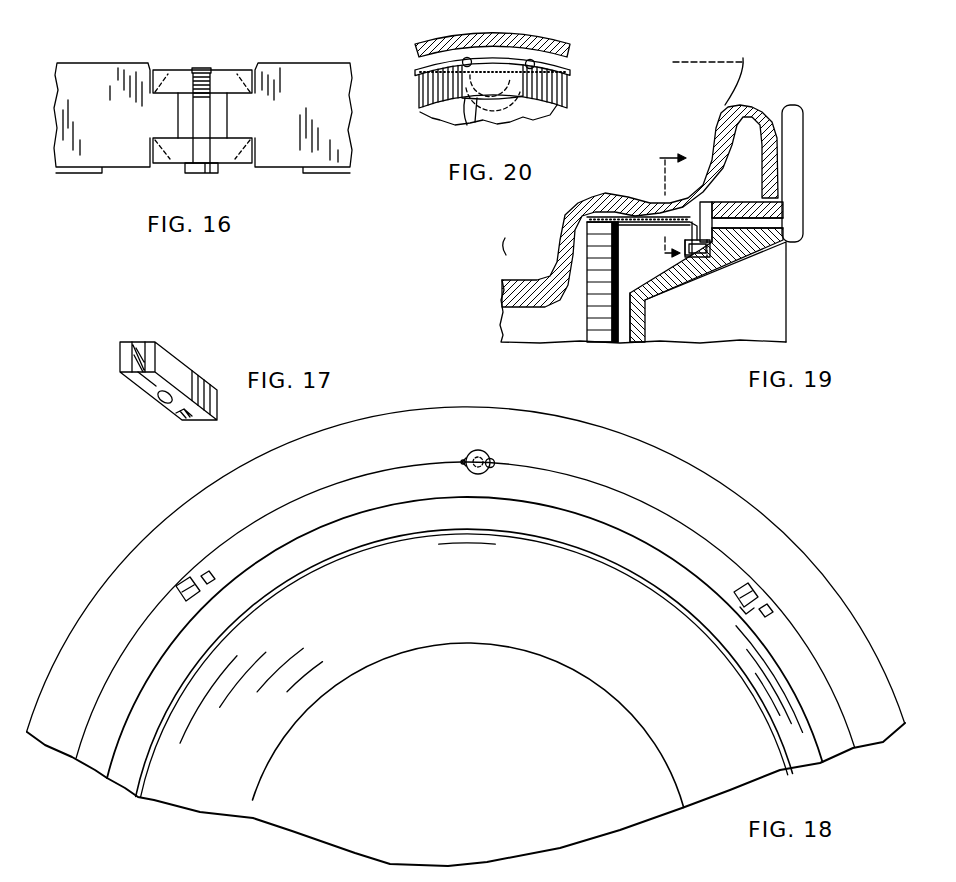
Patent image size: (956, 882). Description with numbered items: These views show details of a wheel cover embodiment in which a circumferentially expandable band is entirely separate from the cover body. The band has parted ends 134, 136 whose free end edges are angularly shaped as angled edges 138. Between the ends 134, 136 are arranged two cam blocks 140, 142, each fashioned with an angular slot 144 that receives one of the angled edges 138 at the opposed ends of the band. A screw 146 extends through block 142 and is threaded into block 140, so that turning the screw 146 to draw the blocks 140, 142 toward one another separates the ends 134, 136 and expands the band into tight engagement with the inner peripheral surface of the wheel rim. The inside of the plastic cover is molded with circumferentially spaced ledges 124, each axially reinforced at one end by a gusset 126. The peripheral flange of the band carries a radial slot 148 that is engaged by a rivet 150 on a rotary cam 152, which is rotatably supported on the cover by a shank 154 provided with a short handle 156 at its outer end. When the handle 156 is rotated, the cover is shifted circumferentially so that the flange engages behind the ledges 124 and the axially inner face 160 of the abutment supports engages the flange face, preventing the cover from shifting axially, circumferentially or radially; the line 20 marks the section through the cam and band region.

In FIG. 16, the parted end of band 134 is at (136, 68).
In FIG. 16, the parted end of band 136 is at (302, 63).
In FIG. 16, the cam block 140 is at (233, 70).
In FIG. 16, the cam block 142 is at (158, 150).
In FIG. 17, the cam block 142 is at (168, 357).
In FIG. 17, the angular slot 144 is at (138, 342).
In FIG. 16, the angled edge 138 is at (164, 165).
In FIG. 16, the screw 146 is at (216, 172).
In FIG. 18, the ledge 124 is at (738, 597).
In FIG. 18, the gusset 126 is at (742, 608).
In FIG. 18, the axially inner face 160 is at (775, 611).
In FIG. 20, the rivet 150 is at (466, 58).
In FIG. 19, the rivet 150 is at (693, 258).
In FIG. 18, the rivet 150 is at (494, 464).
In FIG. 20, the rotary cam 152 is at (500, 120).
In FIG. 19, the rotary cam 152 is at (712, 256).
In FIG. 18, the rotary cam 152 is at (484, 455).
In FIG. 20, the radial slot 148 is at (462, 108).
In FIG. 19, the radial slot 148 is at (684, 258).
In FIG. 20, the shank 154 is at (532, 38).
In FIG. 19, the shank 154 is at (770, 244).
In FIG. 19, the handle 156 is at (804, 182).
In FIG. 19, the section line 20 is at (688, 163).